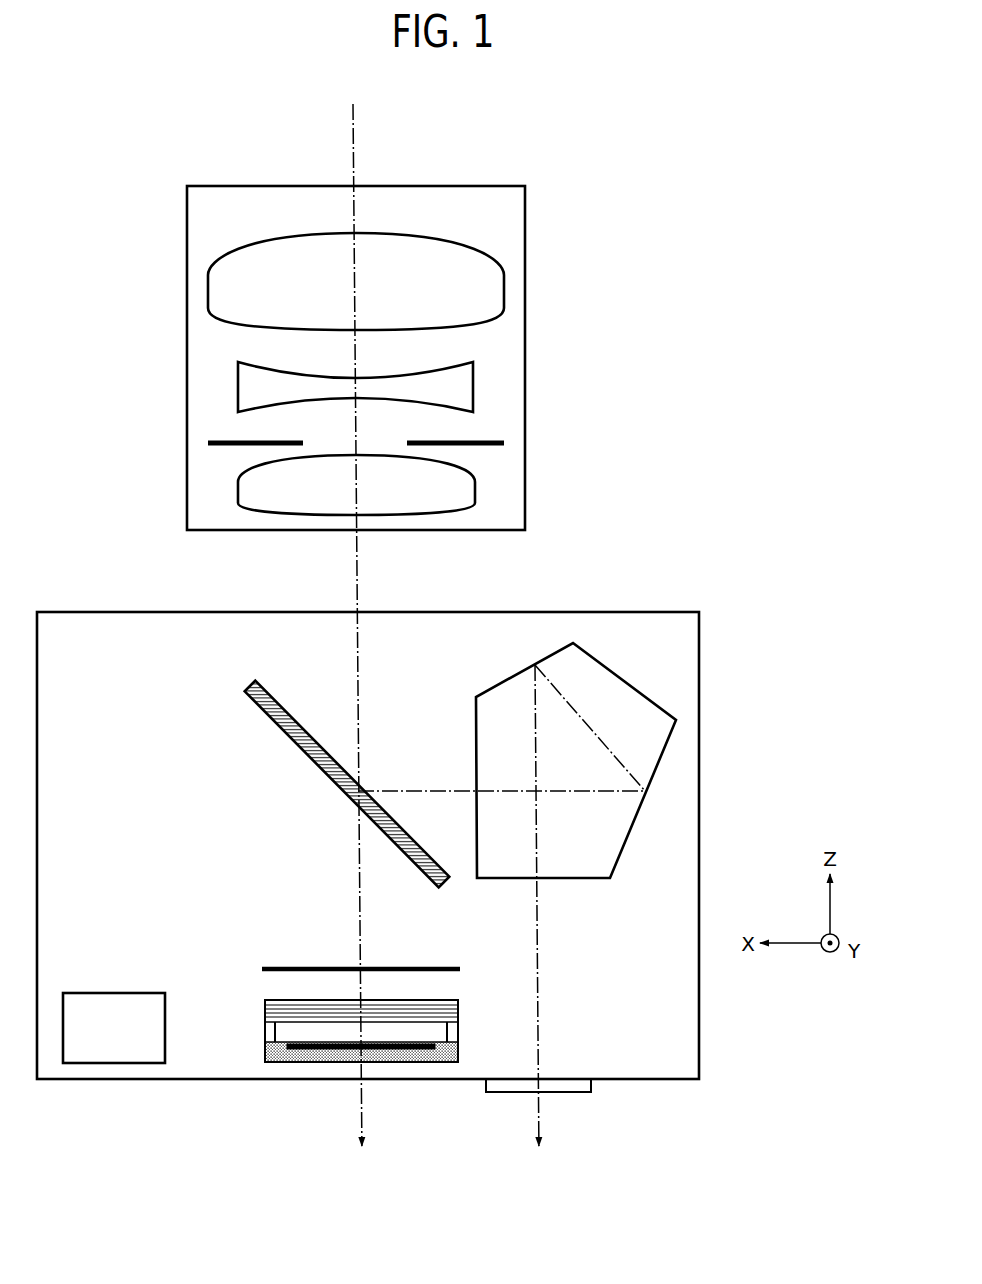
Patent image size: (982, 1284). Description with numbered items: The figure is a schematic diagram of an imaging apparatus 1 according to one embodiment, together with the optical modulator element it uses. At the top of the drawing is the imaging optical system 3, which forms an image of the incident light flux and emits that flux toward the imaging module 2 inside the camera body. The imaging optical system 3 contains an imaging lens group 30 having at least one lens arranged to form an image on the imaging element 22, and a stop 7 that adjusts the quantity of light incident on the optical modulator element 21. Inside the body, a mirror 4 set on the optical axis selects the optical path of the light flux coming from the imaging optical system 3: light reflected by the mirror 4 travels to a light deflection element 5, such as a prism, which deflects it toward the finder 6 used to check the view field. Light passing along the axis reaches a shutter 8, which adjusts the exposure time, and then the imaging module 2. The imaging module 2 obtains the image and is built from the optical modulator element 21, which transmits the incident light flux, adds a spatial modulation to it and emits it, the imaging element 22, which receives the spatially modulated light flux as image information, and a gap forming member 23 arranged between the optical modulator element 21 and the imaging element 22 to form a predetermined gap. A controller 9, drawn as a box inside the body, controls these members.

The imaging apparatus 1 is at (735, 1074).
The imaging module 2 is at (360, 1010).
The imaging optical system 3 is at (526, 230).
The mirror 4 is at (287, 740).
The light deflection element 5 is at (632, 827).
The finder 6 is at (593, 1083).
The stop 7 is at (483, 437).
The shutter 8 is at (430, 967).
The controller 9 is at (128, 993).
The optical modulator element 21 is at (265, 1010).
The imaging element 22 is at (433, 1037).
The gap forming member 23 is at (265, 1033).
The imaging lens group 30 is at (221, 379).